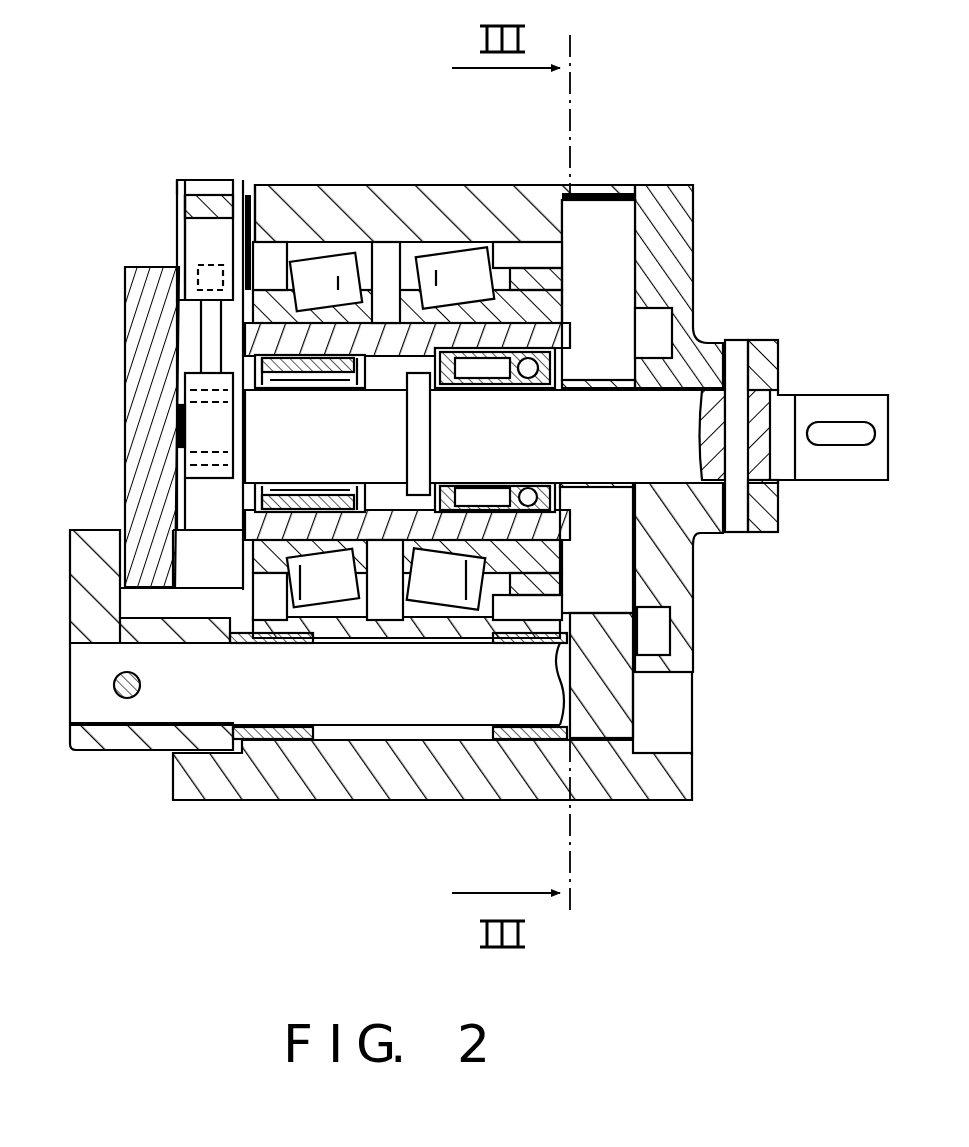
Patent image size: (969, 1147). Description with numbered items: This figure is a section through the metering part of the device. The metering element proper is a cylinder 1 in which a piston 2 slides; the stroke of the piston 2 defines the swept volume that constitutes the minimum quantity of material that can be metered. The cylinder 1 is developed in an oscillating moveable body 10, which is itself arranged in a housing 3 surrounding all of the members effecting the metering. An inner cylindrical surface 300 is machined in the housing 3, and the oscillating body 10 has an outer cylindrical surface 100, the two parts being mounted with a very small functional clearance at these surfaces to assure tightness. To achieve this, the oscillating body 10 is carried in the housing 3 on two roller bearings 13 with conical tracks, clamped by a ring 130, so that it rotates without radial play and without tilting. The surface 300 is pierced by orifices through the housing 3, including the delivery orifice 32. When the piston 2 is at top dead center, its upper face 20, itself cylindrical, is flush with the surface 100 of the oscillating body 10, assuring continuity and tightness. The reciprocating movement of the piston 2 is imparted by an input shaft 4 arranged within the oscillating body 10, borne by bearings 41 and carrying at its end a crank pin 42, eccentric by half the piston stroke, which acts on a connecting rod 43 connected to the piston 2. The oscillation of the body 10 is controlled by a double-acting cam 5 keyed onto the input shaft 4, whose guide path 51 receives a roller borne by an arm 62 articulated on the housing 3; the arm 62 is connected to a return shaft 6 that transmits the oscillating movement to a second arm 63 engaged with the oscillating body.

The cylinder 1 is at (183, 182).
The piston 2 is at (200, 232).
The housing 3 is at (480, 186).
The input shaft 4 is at (838, 412).
The double-acting cam 5 is at (680, 283).
The return shaft 6 is at (160, 705).
The oscillating moveable body 10 is at (243, 272).
The roller bearings 13 is at (530, 296).
The upper face of the piston 20 is at (226, 208).
The delivery orifice 32 is at (210, 178).
The bearings 41 is at (297, 486).
The crank pin 42 is at (180, 425).
The connecting rod 43 is at (185, 360).
The guide path 51 is at (640, 332).
The arm 62 is at (590, 640).
The second arm 63 is at (95, 570).
The outer cylindrical surface 100 is at (252, 187).
The ring 130 is at (510, 550).
The inner cylindrical surface 300 is at (178, 202).